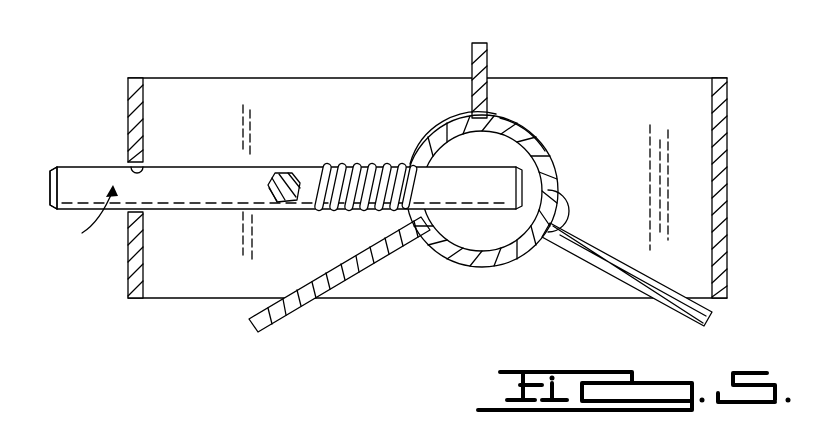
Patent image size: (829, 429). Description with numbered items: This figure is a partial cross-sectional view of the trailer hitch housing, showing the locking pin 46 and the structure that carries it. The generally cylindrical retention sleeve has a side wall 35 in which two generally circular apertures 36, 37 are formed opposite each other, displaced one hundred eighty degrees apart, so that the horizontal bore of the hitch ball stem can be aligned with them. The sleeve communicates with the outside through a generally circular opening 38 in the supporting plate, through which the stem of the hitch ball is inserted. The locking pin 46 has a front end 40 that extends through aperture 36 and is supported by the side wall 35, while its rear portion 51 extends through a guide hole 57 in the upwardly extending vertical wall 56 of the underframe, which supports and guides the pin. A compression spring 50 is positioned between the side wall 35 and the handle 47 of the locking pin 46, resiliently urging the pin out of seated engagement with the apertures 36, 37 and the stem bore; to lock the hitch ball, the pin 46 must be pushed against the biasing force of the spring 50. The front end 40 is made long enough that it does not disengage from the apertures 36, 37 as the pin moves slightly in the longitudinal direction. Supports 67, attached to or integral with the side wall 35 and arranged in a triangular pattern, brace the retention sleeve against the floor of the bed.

The side wall 35 is at (533, 147).
The aperture 36 is at (415, 170).
The aperture 37 is at (550, 237).
The generally circular opening 38 is at (516, 142).
The front end 40 is at (213, 193).
The locking pin 46 is at (80, 224).
The handle 47 is at (283, 172).
The compression spring 50 is at (345, 163).
The rear portion 51 is at (65, 172).
The vertical wall 56 is at (133, 92).
The guide hole 57 is at (147, 167).
The supports 67 is at (475, 63).